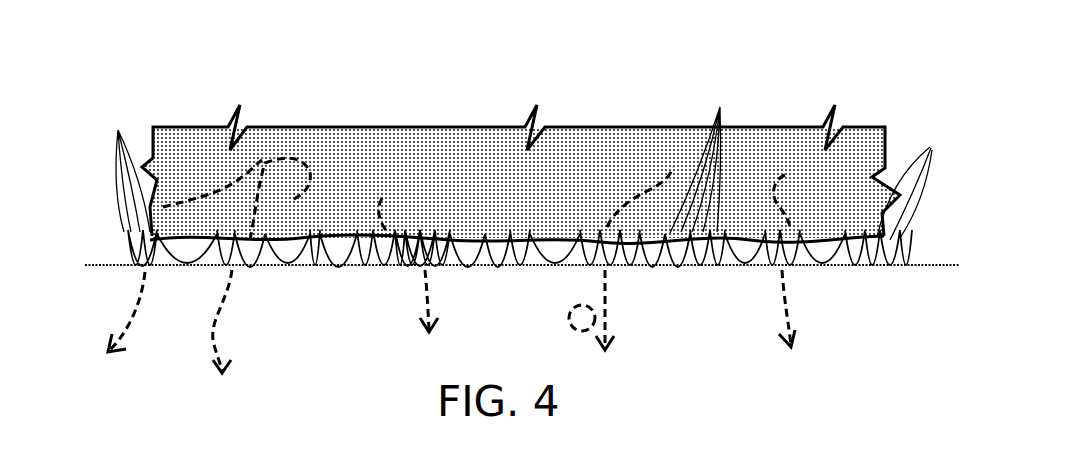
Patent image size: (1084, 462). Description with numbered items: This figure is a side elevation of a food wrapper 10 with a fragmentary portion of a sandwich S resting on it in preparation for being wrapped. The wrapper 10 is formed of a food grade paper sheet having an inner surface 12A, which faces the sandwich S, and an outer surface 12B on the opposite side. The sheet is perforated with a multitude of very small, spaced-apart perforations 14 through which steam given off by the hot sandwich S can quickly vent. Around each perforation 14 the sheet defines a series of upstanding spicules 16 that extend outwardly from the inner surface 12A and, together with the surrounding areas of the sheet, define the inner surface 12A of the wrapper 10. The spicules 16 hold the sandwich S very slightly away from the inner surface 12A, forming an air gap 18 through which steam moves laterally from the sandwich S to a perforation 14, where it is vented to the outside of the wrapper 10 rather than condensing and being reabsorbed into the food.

The wrapper 10 is at (834, 294).
The inner surface 12A is at (110, 260).
The outer surface 12B is at (387, 270).
The perforations 14 is at (133, 267).
The spicules 16 is at (524, 162).
The air gap 18 is at (83, 227).
The sandwich S is at (420, 170).